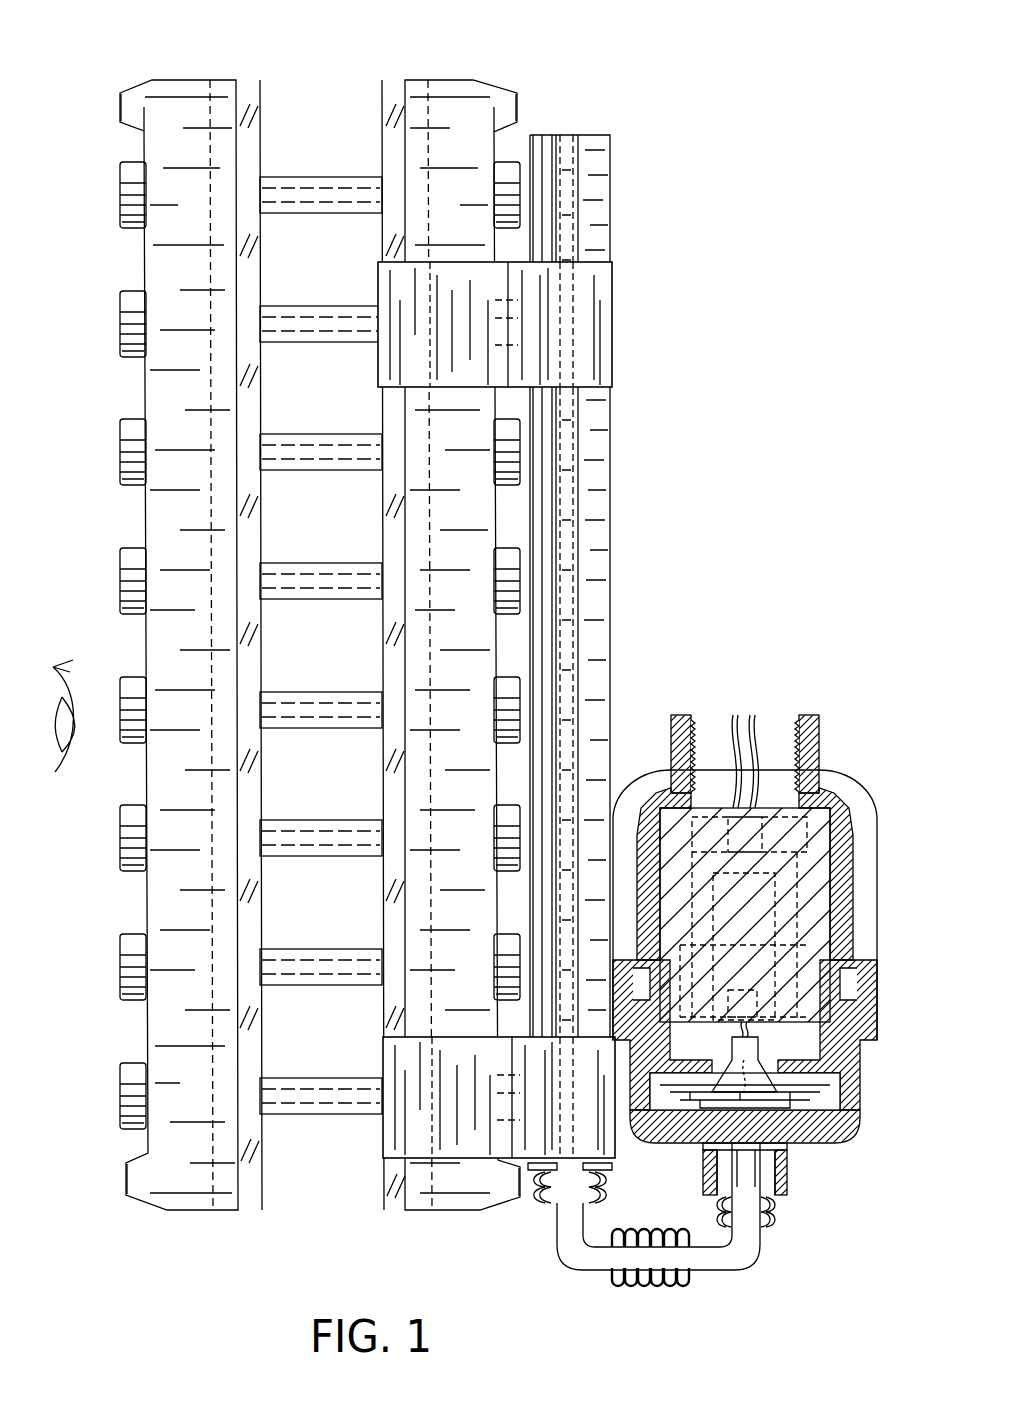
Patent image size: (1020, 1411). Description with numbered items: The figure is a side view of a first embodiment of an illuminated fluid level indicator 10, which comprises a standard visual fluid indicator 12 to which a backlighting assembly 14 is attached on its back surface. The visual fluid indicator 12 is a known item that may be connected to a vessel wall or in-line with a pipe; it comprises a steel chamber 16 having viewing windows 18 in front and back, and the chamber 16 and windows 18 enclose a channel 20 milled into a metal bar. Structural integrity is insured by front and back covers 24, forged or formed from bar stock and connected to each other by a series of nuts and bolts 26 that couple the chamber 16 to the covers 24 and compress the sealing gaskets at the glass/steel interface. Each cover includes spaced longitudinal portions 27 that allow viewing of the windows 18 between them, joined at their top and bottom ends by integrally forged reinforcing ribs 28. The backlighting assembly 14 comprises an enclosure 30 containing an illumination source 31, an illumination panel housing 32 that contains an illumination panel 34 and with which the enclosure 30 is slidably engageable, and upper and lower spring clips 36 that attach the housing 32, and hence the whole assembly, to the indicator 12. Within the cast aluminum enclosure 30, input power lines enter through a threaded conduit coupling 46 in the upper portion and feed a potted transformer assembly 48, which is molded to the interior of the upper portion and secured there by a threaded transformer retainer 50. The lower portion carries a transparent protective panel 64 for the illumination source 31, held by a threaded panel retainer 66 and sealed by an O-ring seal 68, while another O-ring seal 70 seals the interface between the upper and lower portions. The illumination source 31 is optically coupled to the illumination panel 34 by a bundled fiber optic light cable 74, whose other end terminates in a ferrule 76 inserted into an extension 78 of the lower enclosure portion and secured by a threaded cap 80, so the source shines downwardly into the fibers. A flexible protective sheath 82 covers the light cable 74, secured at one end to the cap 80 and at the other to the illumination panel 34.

The illuminated fluid level indicator 10 is at (658, 128).
The visual fluid indicator 12 is at (115, 272).
The backlighting assembly 14 is at (682, 664).
The steel chamber 16 is at (320, 905).
The viewing windows 18 is at (242, 107).
The channel 20 is at (318, 1228).
The front and back covers 24 is at (180, 107).
The nuts and bolts 26 is at (132, 428).
The spaced longitudinal portions 27 is at (200, 522).
The reinforcing ribs 28 is at (133, 117).
The enclosure 30 is at (835, 771).
The illumination source 31 is at (853, 1010).
The illumination panel housing 32 is at (593, 197).
The illumination panel 34 is at (567, 178).
The upper and lower spring clips 36 is at (581, 328).
The threaded conduit coupling 46 is at (812, 738).
The potted transformer assembly 48 is at (815, 843).
The transformer retainer 50 is at (868, 918).
The transparent protective panel 64 is at (697, 1143).
The threaded panel retainer 66 is at (823, 1100).
The O-ring seal 68 is at (807, 1143).
The O-ring seal 70 is at (862, 992).
The bundled fiber optic light cable 74 is at (573, 1243).
The ferrule 76 is at (713, 1192).
The extension 78 is at (787, 1162).
The threaded cap 80 is at (787, 1190).
The flexible protective sheath 82 is at (653, 1285).